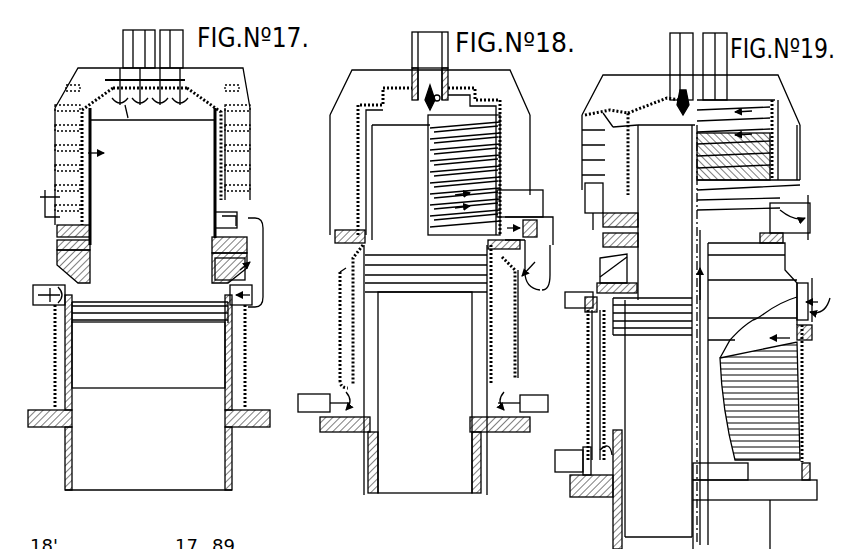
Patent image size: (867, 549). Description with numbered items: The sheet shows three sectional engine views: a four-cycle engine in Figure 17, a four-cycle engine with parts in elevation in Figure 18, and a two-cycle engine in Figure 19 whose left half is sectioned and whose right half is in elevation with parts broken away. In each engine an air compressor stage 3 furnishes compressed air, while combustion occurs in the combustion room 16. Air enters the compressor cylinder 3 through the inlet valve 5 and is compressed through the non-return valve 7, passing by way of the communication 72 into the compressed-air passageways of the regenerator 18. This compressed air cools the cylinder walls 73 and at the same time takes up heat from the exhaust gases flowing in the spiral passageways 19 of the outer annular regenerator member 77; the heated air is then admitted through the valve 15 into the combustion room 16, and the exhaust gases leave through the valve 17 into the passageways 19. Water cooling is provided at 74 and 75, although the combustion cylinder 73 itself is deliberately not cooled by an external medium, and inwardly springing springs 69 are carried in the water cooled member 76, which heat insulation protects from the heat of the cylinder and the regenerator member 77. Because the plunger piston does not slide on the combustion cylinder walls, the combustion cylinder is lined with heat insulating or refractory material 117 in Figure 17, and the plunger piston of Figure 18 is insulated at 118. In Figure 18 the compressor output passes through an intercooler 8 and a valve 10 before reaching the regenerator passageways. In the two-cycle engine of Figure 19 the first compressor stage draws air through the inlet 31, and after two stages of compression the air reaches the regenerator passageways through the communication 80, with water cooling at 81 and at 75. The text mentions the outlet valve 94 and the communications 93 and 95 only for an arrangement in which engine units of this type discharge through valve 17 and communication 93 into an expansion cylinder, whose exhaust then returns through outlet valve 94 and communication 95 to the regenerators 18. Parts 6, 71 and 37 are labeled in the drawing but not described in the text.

In FIG. 17, the valve 17 is at (128, 113).
In FIG. 17, the regenerator 18 is at (250, 144).
In FIG. 18, the regenerator 18 is at (332, 144).
In FIG. 17, the valve 15 is at (190, 90).
In FIG. 19, the valve 15 is at (684, 110).
In FIG. 17, the combustion room 16 is at (235, 105).
In FIG. 17, the spiral passageways 19 is at (252, 102).
In FIG. 19, the spiral passageways 19 is at (770, 113).
In FIG. 17, the heat insulating or refractory lining 117 is at (86, 157).
In FIG. 17, the inwardly springing springs 69 is at (92, 263).
In FIG. 17, the inlet valve 5 is at (55, 292).
In FIG. 17, the non-return valve 7 is at (250, 295).
In FIG. 17, the communication 72 is at (264, 247).
In FIG. 17, the water cooled member 76 is at (238, 272).
In FIG. 17, the water cooling 75 is at (247, 272).
In FIG. 19, the water cooling 75 is at (615, 273).
In FIG. 17, the air compressor stage 3 is at (80, 295).
In FIG. 17, the water cooling 74 is at (65, 355).
In FIG. 18, the plunger piston insulation 118 is at (375, 135).
In FIG. 18, the combustion cylinder 73 is at (357, 175).
In FIG. 18, the outer annular regenerator member 77 is at (355, 172).
In FIG. 19, the outer annular regenerator member 77 is at (745, 106).
In FIG. 18, the valve 10 is at (537, 196).
In FIG. 18, the cylinder wall 6 is at (358, 315).
In FIG. 18, the intercooler 8 is at (513, 337).
In FIG. 18, the flange 71 is at (366, 448).
In FIG. 19, the liner 37 is at (626, 100).
In FIG. 19, the inlet 31 is at (800, 287).
In FIG. 19, the communication 80 is at (697, 447).
In FIG. 19, the water cooling 81 is at (608, 413).
In FIG. 19, the outlet valve 94 is at (613, 548).
In FIG. 19, the communication 95 is at (587, 548).
In FIG. 19, the communication 93 is at (549, 541).